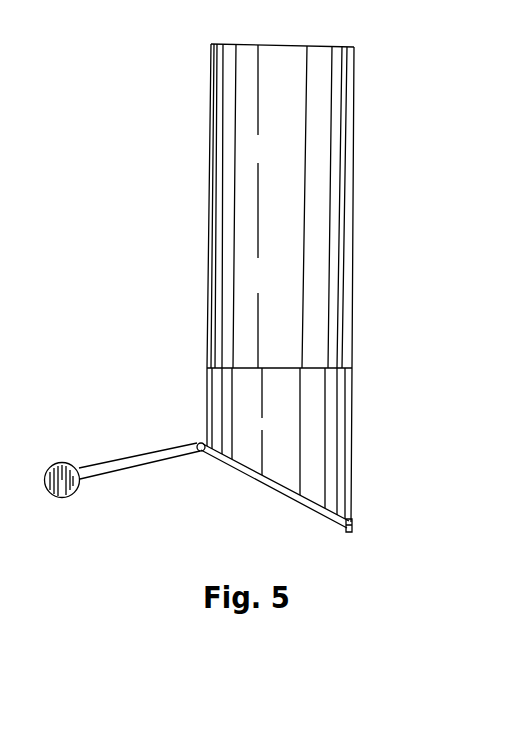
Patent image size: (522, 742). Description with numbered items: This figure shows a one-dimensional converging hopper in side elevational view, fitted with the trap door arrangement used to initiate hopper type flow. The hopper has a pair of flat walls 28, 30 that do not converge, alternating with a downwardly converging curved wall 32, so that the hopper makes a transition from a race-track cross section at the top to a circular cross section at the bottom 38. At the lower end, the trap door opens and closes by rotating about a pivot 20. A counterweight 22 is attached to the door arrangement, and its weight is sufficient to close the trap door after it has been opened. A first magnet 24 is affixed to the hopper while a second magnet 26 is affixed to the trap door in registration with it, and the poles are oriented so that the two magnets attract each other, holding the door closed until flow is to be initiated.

The pivot 20 is at (198, 443).
The counterweight 22 is at (65, 462).
The first magnet 24 is at (352, 510).
The second magnet 26 is at (350, 534).
The flat wall 28 is at (208, 135).
The flat wall 30 is at (355, 107).
The curved wall 32 is at (278, 218).
The bottom 38 is at (316, 368).